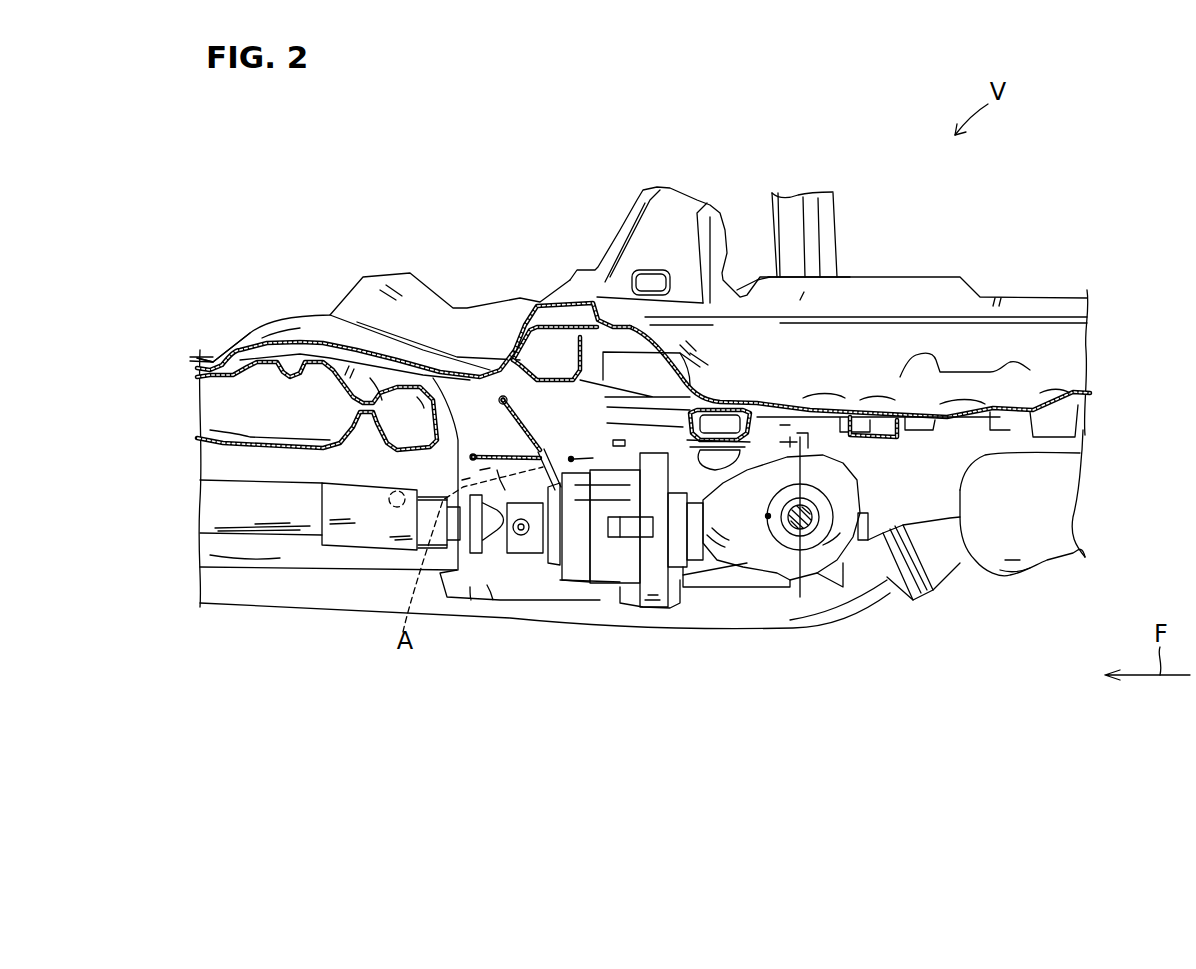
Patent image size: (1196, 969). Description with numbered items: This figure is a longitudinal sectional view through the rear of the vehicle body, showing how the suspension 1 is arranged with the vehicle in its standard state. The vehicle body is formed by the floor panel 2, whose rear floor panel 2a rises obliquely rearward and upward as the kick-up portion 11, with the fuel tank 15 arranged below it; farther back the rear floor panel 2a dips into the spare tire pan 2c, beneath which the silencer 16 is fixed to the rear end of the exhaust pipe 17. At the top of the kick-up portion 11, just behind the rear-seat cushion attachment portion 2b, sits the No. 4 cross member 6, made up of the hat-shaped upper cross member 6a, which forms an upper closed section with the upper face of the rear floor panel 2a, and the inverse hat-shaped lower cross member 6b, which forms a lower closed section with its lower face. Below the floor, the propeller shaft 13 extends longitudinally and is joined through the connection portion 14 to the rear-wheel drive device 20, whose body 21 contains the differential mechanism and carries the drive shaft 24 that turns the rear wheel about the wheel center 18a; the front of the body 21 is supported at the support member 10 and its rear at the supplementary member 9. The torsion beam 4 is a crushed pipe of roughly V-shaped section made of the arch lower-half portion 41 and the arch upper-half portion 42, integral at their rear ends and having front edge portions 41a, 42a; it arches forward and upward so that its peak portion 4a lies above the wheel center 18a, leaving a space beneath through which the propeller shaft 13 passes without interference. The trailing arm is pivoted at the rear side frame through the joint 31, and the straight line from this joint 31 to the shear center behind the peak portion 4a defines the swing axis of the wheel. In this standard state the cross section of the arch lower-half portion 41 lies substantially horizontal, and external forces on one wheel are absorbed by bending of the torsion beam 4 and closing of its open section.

The suspension 1 is at (532, 500).
The floor panel 2 is at (314, 340).
The rear floor panel 2a is at (630, 327).
The rear-seat cushion attachment portion 2b is at (447, 377).
The spare tire pan 2c is at (1020, 400).
The torsion beam 4 is at (548, 420).
The peak portion 4a is at (540, 455).
The No. 4 cross member 6 is at (577, 300).
The upper cross member 6a is at (548, 305).
The lower cross member 6b is at (585, 360).
The supplementary member 9 is at (893, 437).
The support member 10 is at (720, 407).
The kick-up portion 11 is at (235, 345).
The propeller shaft 13 is at (225, 510).
The connection portion 14 is at (519, 536).
The fuel tank 15 is at (232, 446).
The silencer 16 is at (1055, 560).
The exhaust pipe 17 is at (236, 607).
The wheel center 18a is at (768, 520).
The rear-wheel drive device 20 is at (870, 508).
The body 21 is at (835, 477).
The drive shaft 24 is at (797, 522).
The joint 31 is at (397, 510).
The arch lower-half portion 41 is at (495, 448).
The front edge portion 41a is at (470, 458).
The arch upper-half portion 42 is at (525, 432).
The front edge portion 42a is at (499, 398).